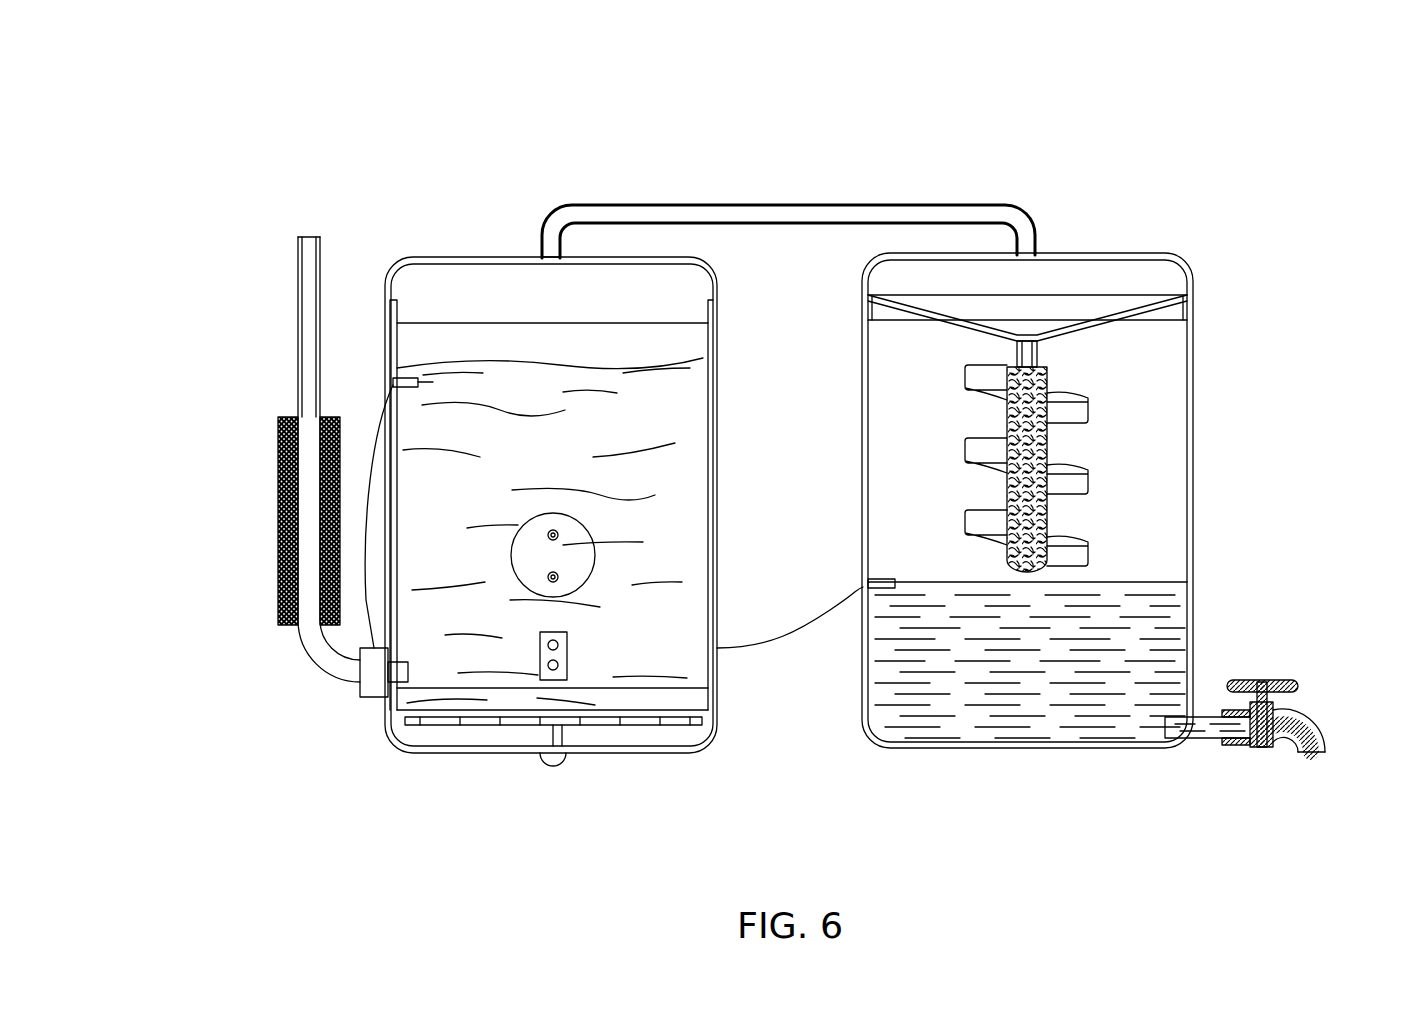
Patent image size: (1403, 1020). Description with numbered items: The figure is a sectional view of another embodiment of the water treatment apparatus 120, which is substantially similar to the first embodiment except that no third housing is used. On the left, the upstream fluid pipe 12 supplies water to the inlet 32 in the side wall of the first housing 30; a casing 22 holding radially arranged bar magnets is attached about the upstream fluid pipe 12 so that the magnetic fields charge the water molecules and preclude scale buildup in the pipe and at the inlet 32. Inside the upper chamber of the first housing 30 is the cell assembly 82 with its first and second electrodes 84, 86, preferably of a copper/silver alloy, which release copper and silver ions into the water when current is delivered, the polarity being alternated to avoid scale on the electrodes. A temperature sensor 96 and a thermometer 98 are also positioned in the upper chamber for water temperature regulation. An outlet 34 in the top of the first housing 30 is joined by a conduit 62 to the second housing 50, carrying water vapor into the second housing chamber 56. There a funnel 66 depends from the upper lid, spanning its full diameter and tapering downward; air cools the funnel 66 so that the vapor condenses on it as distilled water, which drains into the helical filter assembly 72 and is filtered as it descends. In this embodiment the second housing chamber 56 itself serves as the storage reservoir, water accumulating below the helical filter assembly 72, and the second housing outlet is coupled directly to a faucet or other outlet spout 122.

The upstream fluid pipe 12 is at (299, 317).
The casing 22 is at (280, 520).
The first housing 30 is at (465, 247).
The inlet 32 is at (394, 660).
The outlet 34 is at (550, 263).
The second housing 50 is at (1116, 238).
The second housing chamber 56 is at (1178, 413).
The conduit 62 is at (788, 202).
The funnel 66 is at (968, 312).
The helical filter assembly 72 is at (1080, 382).
The cell assembly 82 is at (535, 555).
The first electrode 84 is at (561, 533).
The second electrode 86 is at (560, 575).
The temperature sensor 96 is at (560, 643).
The thermometer 98 is at (560, 665).
The water treatment apparatus 120 is at (967, 102).
The outlet spout 122 is at (1313, 720).